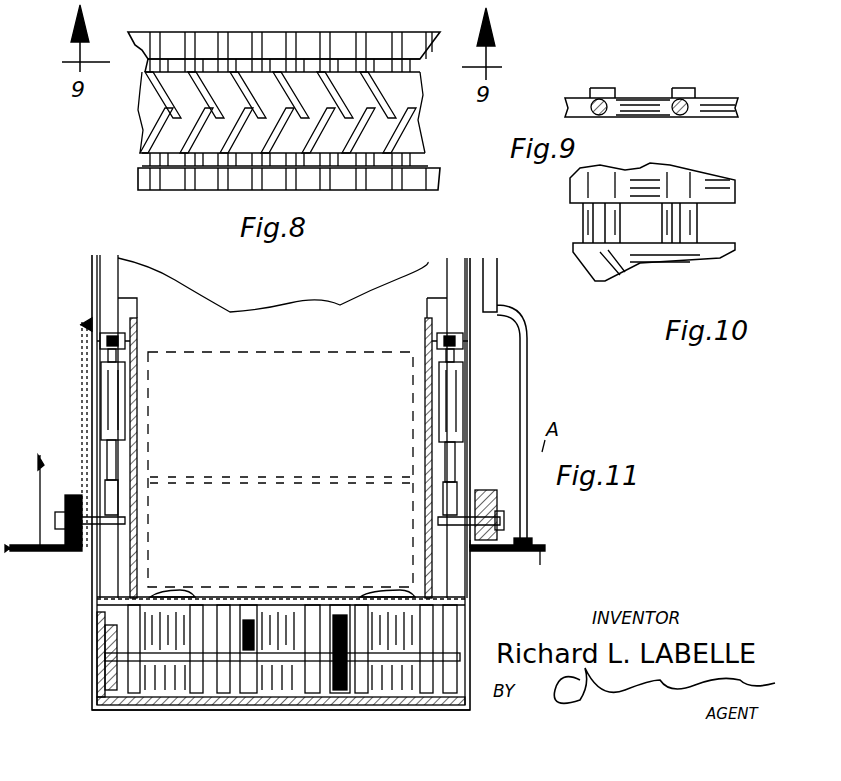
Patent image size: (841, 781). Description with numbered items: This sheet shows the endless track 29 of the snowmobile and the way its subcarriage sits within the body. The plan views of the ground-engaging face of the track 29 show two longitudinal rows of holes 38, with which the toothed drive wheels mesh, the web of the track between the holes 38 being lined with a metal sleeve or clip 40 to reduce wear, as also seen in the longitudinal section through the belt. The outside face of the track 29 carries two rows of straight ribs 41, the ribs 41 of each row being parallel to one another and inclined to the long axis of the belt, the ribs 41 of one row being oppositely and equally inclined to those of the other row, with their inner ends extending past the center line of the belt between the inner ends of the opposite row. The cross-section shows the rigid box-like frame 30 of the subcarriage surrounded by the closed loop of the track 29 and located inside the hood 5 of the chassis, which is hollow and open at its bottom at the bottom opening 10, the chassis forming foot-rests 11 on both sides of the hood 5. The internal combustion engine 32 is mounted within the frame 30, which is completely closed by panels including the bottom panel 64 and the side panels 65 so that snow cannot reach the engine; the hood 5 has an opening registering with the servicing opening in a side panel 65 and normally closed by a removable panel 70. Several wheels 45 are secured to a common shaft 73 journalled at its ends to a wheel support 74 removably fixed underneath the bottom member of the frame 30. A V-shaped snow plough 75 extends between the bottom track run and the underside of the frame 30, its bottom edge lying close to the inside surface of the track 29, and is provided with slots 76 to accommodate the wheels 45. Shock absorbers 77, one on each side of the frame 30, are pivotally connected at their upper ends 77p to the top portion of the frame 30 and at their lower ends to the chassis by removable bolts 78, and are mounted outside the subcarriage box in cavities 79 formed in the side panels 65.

In FIG. 11, the hood 5 is at (455, 332).
In FIG. 11, the bottom opening 10 is at (473, 545).
In FIG. 11, the foot-rests 11 is at (532, 545).
In FIG. 8, the endless track 29 is at (305, 45).
In FIG. 9, the endless track 29 is at (718, 98).
In FIG. 10, the endless track 29 is at (660, 270).
In FIG. 11, the endless track 29 is at (478, 700).
In FIG. 11, the frame 30 is at (455, 268).
In FIG. 11, the internal combustion engine 32 is at (258, 352).
In FIG. 8, the holes 38 is at (218, 60).
In FIG. 9, the holes 38 is at (652, 100).
In FIG. 8, the clip 40 is at (335, 55).
In FIG. 9, the clip 40 is at (630, 98).
In FIG. 10, the clip 40 is at (582, 222).
In FIG. 8, the ribs 41 is at (405, 125).
In FIG. 11, the wheels 45 is at (312, 612).
In FIG. 11, the bottom panel 64 is at (258, 610).
In FIG. 11, the side panels 65 is at (137, 385).
In FIG. 11, the removable panel 70 is at (527, 342).
In FIG. 11, the shaft 73 is at (392, 640).
In FIG. 11, the wheel support 74 is at (462, 660).
In FIG. 11, the snow plough 75 is at (186, 615).
In FIG. 11, the slots 76 is at (228, 618).
In FIG. 11, the shock absorbers 77 is at (108, 400).
In FIG. 11, the upper ends 77p is at (470, 330).
In FIG. 11, the removable bolts 78 is at (92, 548).
In FIG. 11, the cavities 79 is at (430, 462).